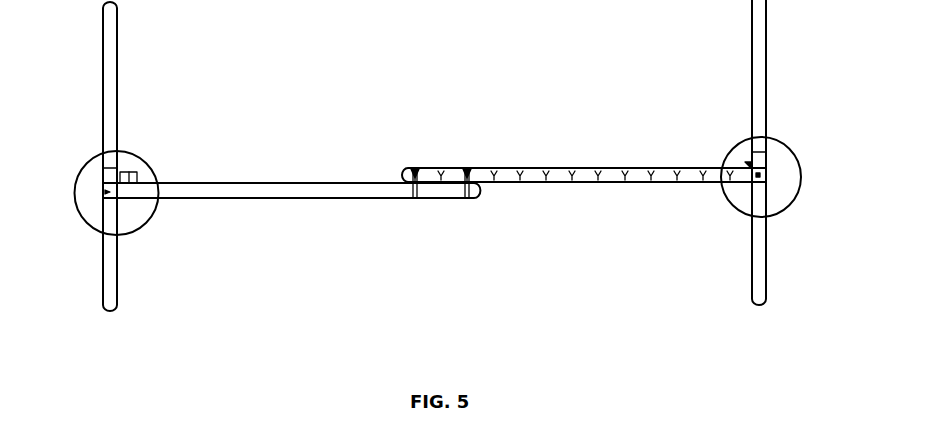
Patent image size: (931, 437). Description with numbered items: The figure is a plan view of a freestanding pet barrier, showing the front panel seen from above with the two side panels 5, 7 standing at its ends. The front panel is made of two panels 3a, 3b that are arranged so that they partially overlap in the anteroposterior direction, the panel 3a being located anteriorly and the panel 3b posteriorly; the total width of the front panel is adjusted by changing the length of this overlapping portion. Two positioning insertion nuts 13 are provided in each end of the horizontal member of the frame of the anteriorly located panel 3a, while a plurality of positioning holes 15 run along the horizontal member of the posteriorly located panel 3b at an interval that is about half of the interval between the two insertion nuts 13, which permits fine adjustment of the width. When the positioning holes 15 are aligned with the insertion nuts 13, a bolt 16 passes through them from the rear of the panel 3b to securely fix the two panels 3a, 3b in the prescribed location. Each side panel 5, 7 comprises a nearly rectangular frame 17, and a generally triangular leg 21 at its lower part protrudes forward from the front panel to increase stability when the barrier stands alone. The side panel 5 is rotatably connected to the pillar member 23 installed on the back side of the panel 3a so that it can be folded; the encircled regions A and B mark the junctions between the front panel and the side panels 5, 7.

The side panel 5 is at (91, 69).
The side panel 7 is at (783, 40).
The frame 17 is at (103, 118).
The leg 21 is at (103, 260).
The panel 3a is at (275, 198).
The panel 3b is at (605, 183).
The positioning insertion nut 13 is at (415, 198).
The positioning hole 15 is at (562, 168).
The bolt 16 is at (413, 168).
The pillar member 23 is at (142, 170).
The detail region A is at (120, 148).
The detail region B is at (741, 144).